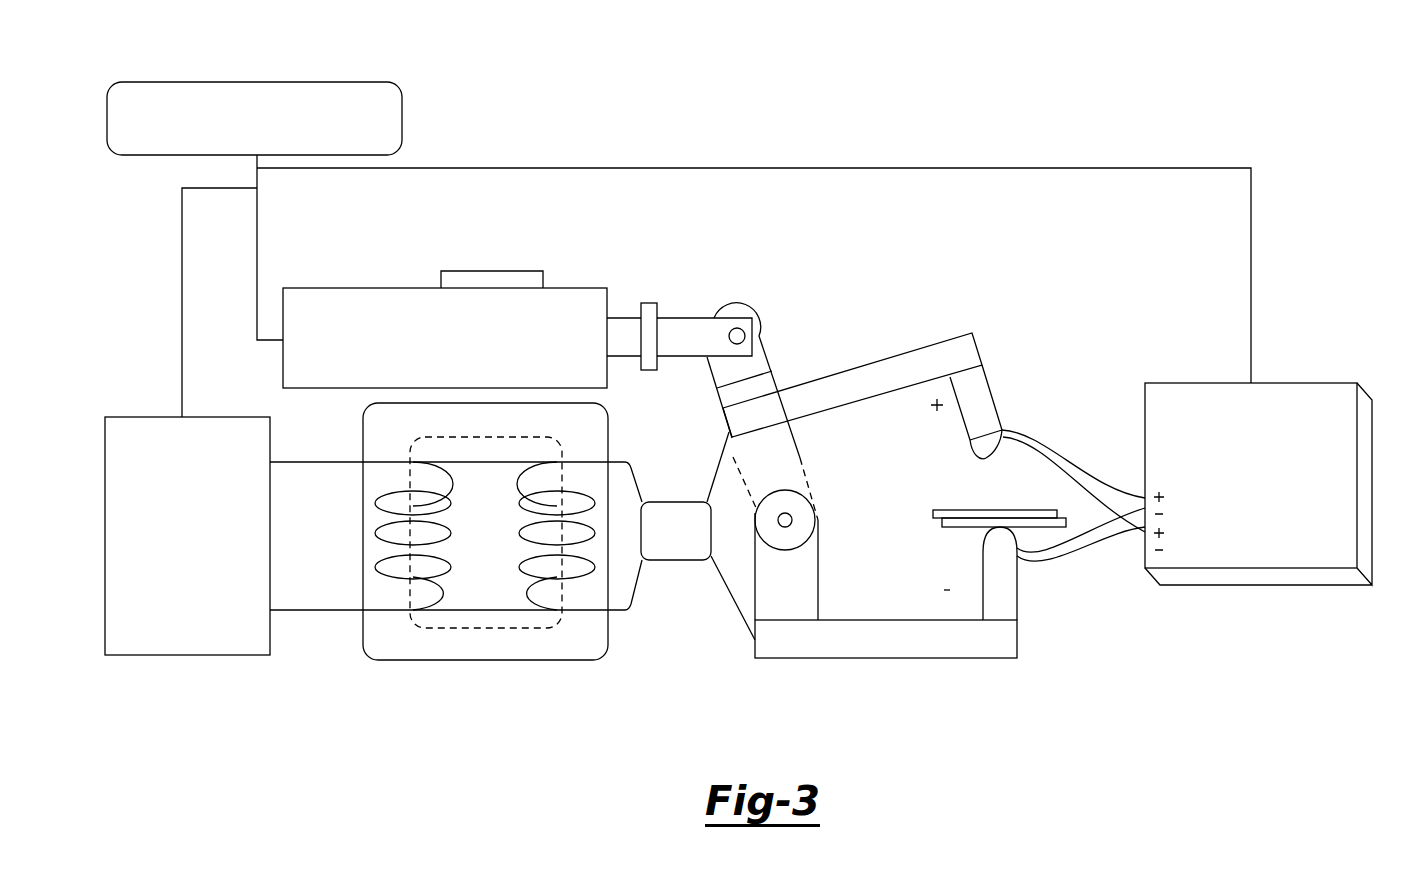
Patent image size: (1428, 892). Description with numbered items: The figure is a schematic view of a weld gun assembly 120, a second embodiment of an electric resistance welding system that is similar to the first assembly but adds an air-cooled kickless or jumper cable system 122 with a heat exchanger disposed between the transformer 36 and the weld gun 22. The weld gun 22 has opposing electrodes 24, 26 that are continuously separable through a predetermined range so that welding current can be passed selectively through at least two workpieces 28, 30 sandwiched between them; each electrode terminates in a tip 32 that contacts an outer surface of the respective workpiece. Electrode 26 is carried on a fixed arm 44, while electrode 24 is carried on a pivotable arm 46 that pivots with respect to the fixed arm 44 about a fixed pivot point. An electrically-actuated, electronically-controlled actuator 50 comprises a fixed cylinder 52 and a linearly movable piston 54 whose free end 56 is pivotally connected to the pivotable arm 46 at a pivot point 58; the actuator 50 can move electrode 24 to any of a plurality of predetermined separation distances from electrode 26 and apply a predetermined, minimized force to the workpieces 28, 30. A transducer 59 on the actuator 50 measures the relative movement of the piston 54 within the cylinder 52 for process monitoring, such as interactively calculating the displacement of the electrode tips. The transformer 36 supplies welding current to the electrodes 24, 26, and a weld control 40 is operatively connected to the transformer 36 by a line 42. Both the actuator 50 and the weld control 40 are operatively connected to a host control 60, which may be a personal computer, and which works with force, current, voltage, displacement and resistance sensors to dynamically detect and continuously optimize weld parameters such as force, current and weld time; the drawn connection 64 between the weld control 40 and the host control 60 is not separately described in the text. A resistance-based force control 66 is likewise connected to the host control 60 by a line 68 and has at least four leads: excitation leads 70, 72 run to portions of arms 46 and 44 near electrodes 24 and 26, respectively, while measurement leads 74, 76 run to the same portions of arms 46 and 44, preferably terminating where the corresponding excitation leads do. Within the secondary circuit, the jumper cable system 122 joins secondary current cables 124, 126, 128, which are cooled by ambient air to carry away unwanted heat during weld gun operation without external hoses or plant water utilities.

The weld gun 22 is at (947, 677).
The electrode 24 is at (983, 397).
The electrode 26 is at (1010, 607).
The workpiece 28 is at (932, 513).
The workpiece 30 is at (942, 524).
The tip 32 is at (980, 457).
The transformer 36 is at (433, 660).
The weld control 40 is at (198, 655).
The line 42 is at (320, 612).
The fixed arm 44 is at (787, 658).
The pivotable arm 46 is at (855, 377).
The actuator 50 is at (408, 288).
The fixed cylinder 52 is at (340, 300).
The piston 54 is at (670, 325).
The free end 56 is at (737, 312).
The pivot point 58 is at (745, 336).
The transducer 59 is at (515, 270).
The host control 60 is at (363, 82).
The communication line 64 is at (182, 255).
The resistance-based force control 66 is at (1342, 383).
The line 68 is at (862, 167).
The excitation lead 70 is at (1103, 483).
The excitation lead 72 is at (1085, 528).
The measurement lead 74 is at (1050, 452).
The measurement lead 76 is at (1120, 540).
The weld gun assembly 120 is at (721, 108).
The jumper cable system 122 is at (662, 541).
The secondary current cable 124 is at (626, 458).
The secondary current cable 126 is at (725, 430).
The secondary current cable 128 is at (736, 588).